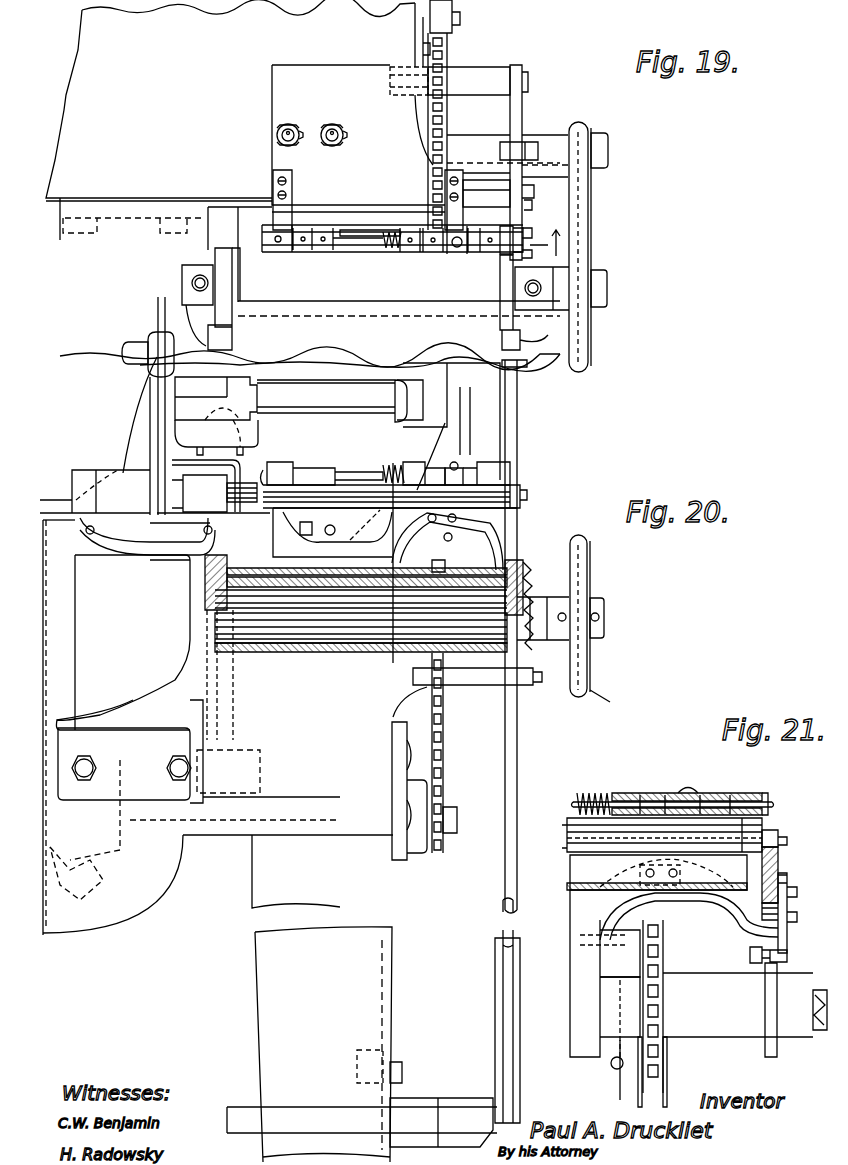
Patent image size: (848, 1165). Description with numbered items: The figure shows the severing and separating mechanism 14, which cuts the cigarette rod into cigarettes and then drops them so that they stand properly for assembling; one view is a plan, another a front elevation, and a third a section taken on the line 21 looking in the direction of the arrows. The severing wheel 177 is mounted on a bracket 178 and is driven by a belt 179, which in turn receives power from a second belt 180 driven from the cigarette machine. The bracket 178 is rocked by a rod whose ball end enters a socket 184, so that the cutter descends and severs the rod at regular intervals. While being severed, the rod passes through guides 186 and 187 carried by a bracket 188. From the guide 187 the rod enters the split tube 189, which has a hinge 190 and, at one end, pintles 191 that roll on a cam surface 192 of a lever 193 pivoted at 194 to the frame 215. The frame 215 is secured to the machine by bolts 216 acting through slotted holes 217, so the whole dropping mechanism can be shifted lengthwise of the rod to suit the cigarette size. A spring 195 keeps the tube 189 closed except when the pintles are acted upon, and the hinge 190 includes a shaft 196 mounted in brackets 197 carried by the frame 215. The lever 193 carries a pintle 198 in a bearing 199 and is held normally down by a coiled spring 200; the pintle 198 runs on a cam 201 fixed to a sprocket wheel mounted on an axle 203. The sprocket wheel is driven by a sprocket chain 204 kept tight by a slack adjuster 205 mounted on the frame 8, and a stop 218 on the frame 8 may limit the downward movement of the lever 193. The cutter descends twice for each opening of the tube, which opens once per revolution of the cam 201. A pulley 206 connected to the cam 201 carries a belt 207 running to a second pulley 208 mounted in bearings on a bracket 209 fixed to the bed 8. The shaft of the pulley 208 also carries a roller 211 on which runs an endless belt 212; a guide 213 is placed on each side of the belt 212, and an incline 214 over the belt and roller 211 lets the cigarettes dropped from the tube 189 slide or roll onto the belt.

In FIG. 19, the frame 8 is at (230, 151).
In FIG. 20, the frame 8 is at (270, 891).
In FIG. 19, the severing and separating mechanism 14 is at (398, 242).
In FIG. 20, the severing and separating mechanism 14 is at (408, 462).
In FIG. 21, the severing and separating mechanism 14 is at (720, 792).
In FIG. 19, the section line 21 is at (334, 252).
In FIG. 20, the severing wheel 177 is at (150, 315).
In FIG. 20, the bracket 178 is at (190, 425).
In FIG. 20, the belt 179 is at (518, 414).
In FIG. 20, the second belt 180 is at (216, 437).
In FIG. 20, the socket 184 is at (252, 440).
In FIG. 20, the guide 186 is at (104, 484).
In FIG. 20, the guide 187 is at (175, 510).
In FIG. 20, the bracket 188 is at (125, 532).
In FIG. 20, the split tube 189 is at (289, 526).
In FIG. 21, the split tube 189 is at (572, 840).
In FIG. 19, the hinge 190 is at (300, 268).
In FIG. 21, the hinge 190 is at (646, 792).
In FIG. 21, the pintles 191 is at (768, 818).
In FIG. 21, the cam surface 192 is at (780, 845).
In FIG. 19, the lever 193 is at (512, 114).
In FIG. 21, the lever 193 is at (780, 878).
In FIG. 19, the pivot 194 is at (485, 70).
In FIG. 19, the spring 195 is at (404, 250).
In FIG. 20, the spring 195 is at (385, 465).
In FIG. 21, the spring 195 is at (596, 790).
In FIG. 19, the shaft 196 is at (372, 250).
In FIG. 20, the shaft 196 is at (517, 478).
In FIG. 21, the shaft 196 is at (762, 795).
In FIG. 19, the brackets 197 is at (290, 210).
In FIG. 20, the brackets 197 is at (454, 462).
In FIG. 21, the brackets 197 is at (687, 780).
In FIG. 21, the pintle 198 is at (752, 962).
In FIG. 21, the bearing 199 is at (783, 950).
In FIG. 19, the coiled spring 200 is at (526, 203).
In FIG. 20, the coiled spring 200 is at (508, 623).
In FIG. 21, the cam 201 is at (768, 1007).
In FIG. 21, the axle 203 is at (809, 1029).
In FIG. 20, the sprocket chain 204 is at (452, 770).
In FIG. 21, the sprocket chain 204 is at (658, 1006).
In FIG. 21, the slack adjuster 205 is at (620, 1085).
In FIG. 19, the pulley 206 is at (592, 128).
In FIG. 19, the belt 207 is at (582, 196).
In FIG. 20, the belt 207 is at (576, 694).
In FIG. 19, the second pulley 208 is at (590, 332).
In FIG. 20, the second pulley 208 is at (613, 703).
In FIG. 19, the bracket 209 is at (534, 340).
In FIG. 20, the roller 211 is at (312, 645).
In FIG. 20, the endless belt 212 is at (262, 568).
In FIG. 20, the guide 213 is at (228, 556).
In FIG. 21, the incline 214 is at (578, 882).
In FIG. 19, the frame 215 is at (286, 80).
In FIG. 19, the bolts 216 is at (291, 124).
In FIG. 19, the slotted holes 217 is at (308, 143).
In FIG. 19, the stop 218 is at (486, 193).
In FIG. 20, the stop 218 is at (480, 534).
In FIG. 21, the stop 218 is at (732, 928).